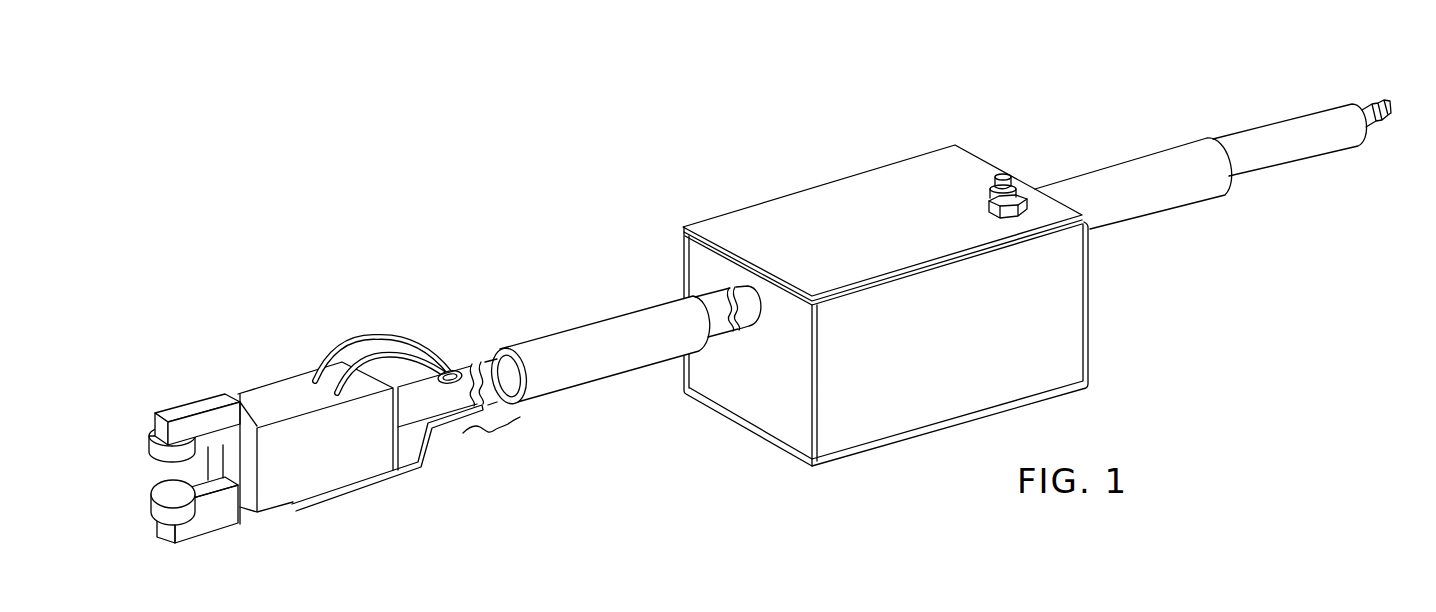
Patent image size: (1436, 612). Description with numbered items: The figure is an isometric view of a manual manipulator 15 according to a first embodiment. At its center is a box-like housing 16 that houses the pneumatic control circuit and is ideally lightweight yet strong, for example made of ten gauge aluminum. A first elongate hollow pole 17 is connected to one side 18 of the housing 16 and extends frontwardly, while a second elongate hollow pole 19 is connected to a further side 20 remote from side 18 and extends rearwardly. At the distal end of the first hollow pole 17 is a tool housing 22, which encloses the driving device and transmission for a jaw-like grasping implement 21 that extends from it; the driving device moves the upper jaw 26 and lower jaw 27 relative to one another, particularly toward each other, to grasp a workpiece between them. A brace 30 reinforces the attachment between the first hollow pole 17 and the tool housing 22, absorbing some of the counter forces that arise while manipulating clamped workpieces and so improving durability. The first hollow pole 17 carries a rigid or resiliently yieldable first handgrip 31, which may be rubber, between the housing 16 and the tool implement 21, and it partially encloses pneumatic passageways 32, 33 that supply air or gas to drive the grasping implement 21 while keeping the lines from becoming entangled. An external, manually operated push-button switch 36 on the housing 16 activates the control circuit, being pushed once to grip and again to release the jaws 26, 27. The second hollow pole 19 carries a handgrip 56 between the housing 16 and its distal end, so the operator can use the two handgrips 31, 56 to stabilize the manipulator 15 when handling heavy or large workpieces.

The manual manipulator 15 is at (603, 252).
The housing 16 is at (755, 230).
The first elongate hollow pole 17 is at (481, 366).
The side of the housing 18 is at (737, 400).
The second elongate hollow pole 19 is at (1253, 142).
The further side of the housing 20 is at (1090, 332).
The jaw-like grasping implement 21 is at (255, 562).
The tool housing 22 is at (273, 392).
The upper jaw 26 is at (201, 397).
The lower jaw 27 is at (197, 547).
The brace 30 is at (433, 450).
The first handgrip 31 is at (582, 330).
The pneumatic passageway 32 is at (366, 342).
The pneumatic passageway 33 is at (413, 360).
The switch 36 is at (1004, 173).
The handgrip 56 is at (1132, 157).